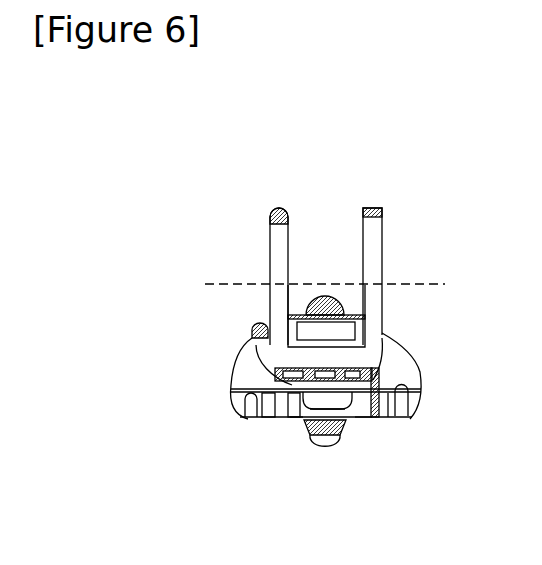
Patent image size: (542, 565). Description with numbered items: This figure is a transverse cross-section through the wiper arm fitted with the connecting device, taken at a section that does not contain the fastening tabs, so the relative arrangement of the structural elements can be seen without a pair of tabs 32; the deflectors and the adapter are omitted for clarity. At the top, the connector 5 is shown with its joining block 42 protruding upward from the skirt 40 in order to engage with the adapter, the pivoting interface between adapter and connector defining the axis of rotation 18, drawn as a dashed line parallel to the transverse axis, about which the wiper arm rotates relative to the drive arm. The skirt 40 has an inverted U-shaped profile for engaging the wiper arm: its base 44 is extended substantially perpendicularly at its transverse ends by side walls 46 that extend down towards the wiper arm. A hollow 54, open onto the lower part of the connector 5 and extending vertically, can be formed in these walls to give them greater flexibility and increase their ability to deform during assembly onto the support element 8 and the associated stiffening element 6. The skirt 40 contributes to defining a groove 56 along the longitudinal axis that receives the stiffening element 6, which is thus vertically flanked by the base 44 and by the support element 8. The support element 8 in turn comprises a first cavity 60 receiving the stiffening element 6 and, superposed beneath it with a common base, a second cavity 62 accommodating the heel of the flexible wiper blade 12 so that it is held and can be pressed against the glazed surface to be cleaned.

The connector 5 is at (329, 221).
The joining block 42 is at (282, 245).
The base 44 is at (385, 333).
The axis of rotation 18 is at (212, 284).
The hollow 54 is at (325, 355).
The skirt 40 is at (258, 341).
The stiffening element 6 is at (276, 381).
The first cavity 60 is at (300, 393).
The side walls 46 is at (410, 383).
The groove 56 is at (400, 407).
The support element 8 is at (362, 402).
The second cavity 62 is at (348, 417).
The pair of tabs 32 is at (293, 415).
The wiper blade 12 is at (320, 430).